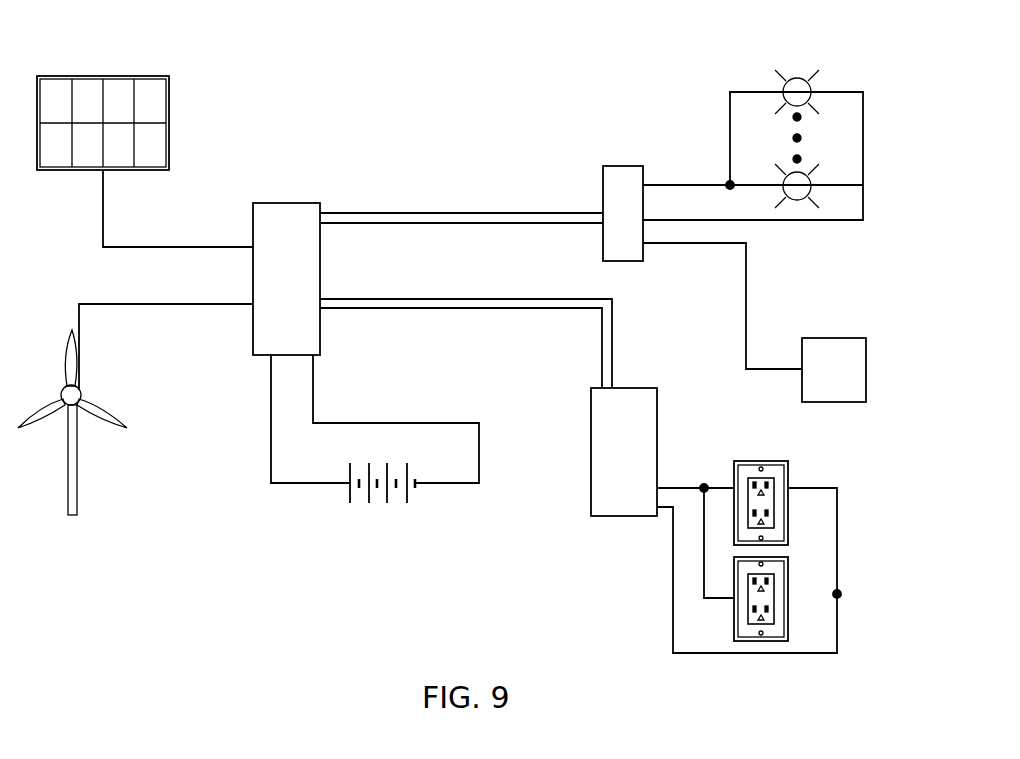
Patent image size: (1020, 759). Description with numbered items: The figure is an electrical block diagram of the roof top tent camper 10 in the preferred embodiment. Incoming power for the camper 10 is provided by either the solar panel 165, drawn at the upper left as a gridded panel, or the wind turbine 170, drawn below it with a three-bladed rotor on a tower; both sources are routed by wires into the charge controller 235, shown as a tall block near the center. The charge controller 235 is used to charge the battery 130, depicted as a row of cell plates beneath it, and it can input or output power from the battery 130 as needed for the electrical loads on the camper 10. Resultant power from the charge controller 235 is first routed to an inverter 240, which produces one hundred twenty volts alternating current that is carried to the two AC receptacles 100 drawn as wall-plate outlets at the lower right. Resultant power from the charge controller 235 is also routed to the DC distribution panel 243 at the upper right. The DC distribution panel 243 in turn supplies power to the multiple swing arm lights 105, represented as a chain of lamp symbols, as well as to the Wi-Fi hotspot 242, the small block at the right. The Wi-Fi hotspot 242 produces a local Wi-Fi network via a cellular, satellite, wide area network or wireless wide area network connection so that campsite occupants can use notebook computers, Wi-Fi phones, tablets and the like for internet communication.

The camper 10 is at (203, 580).
The AC receptacle 100 is at (779, 497).
The swing arm light 105 is at (807, 83).
The battery 130 is at (390, 503).
The solar panel 165 is at (129, 115).
The wind turbine 170 is at (82, 392).
The charge controller 235 is at (287, 228).
The inverter 240 is at (635, 456).
The Wi-Fi hotspot 242 is at (858, 383).
The DC distribution panel 243 is at (618, 198).